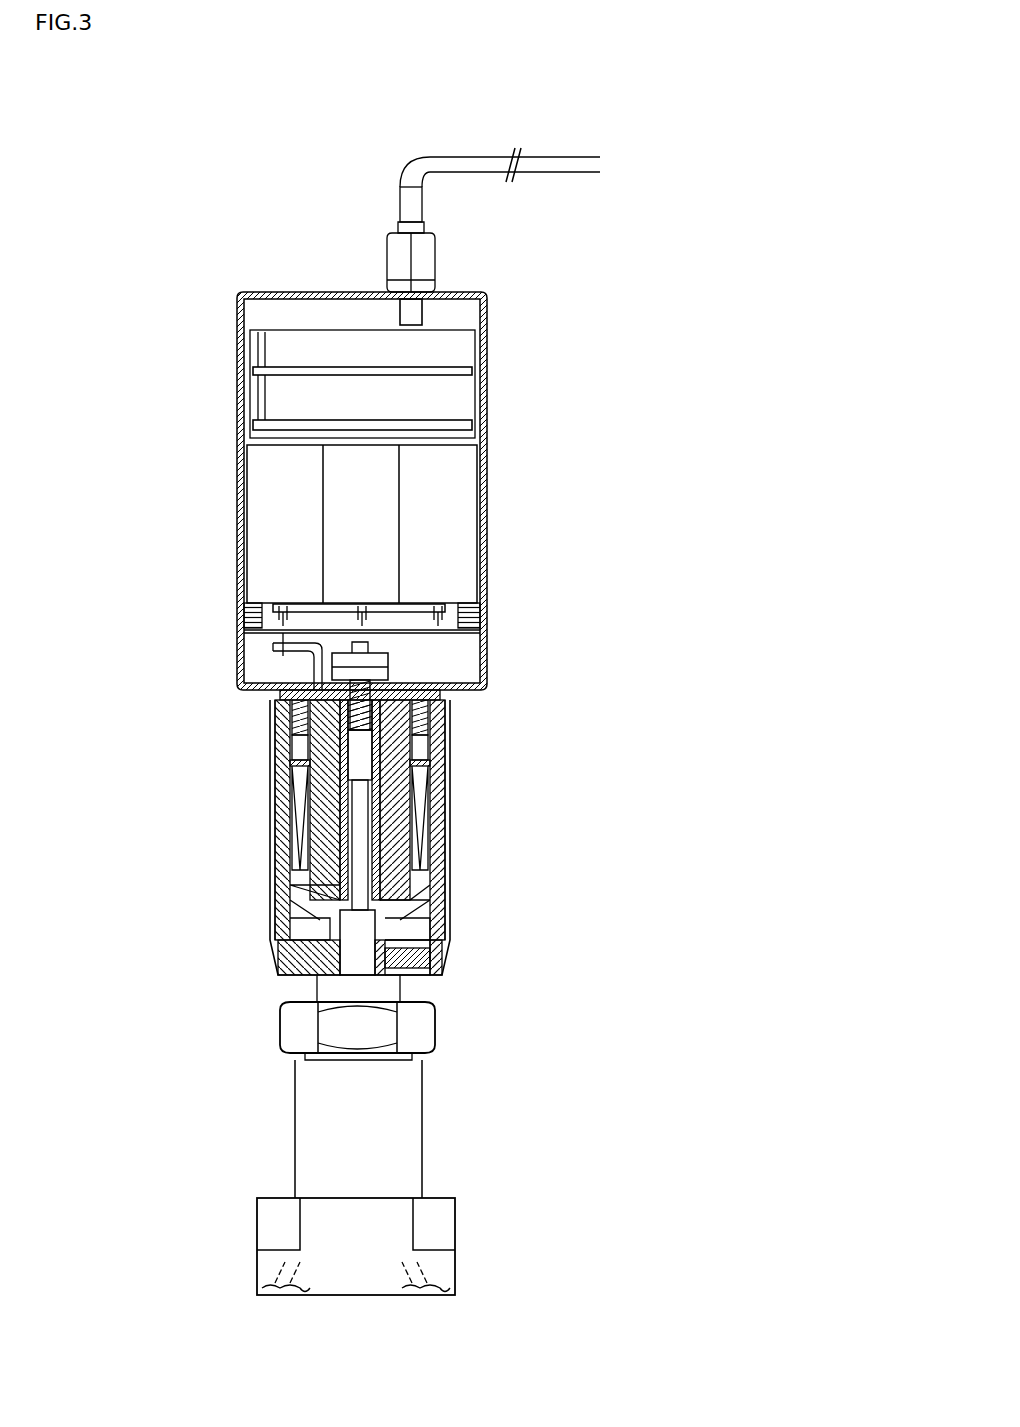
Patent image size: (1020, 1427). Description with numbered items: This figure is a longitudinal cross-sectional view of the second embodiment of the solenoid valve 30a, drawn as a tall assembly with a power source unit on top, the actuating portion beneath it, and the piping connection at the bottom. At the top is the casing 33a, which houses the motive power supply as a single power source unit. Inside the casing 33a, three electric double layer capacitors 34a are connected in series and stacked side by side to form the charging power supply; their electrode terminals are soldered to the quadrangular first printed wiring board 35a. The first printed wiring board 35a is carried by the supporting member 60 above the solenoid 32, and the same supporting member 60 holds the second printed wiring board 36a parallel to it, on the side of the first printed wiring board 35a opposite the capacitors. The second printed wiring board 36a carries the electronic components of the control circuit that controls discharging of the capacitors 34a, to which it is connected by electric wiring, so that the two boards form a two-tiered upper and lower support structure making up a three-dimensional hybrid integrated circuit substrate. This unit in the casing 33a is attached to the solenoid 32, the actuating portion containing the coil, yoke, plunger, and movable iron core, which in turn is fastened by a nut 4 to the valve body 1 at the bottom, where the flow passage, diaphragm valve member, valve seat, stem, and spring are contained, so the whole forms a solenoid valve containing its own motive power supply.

The valve body 1 is at (456, 1262).
The nut 4 is at (437, 1022).
The solenoid valve 30a is at (672, 287).
The solenoid 32 is at (468, 808).
The casing 33a is at (296, 292).
The electric double layer capacitors 34a is at (297, 545).
The first printed wiring board 35a is at (487, 415).
The second printed wiring board 36a is at (487, 357).
The supporting member 60 is at (488, 312).